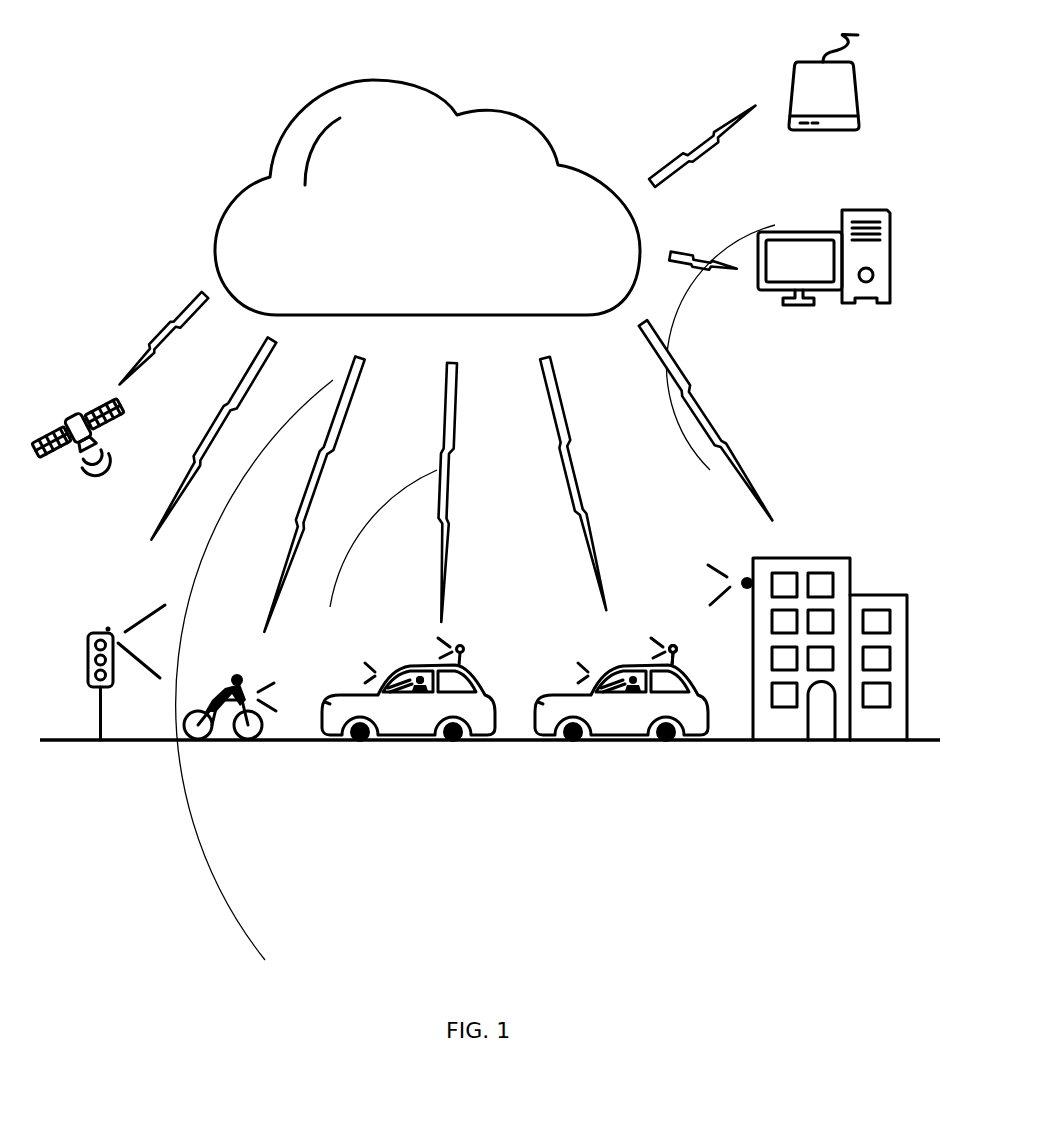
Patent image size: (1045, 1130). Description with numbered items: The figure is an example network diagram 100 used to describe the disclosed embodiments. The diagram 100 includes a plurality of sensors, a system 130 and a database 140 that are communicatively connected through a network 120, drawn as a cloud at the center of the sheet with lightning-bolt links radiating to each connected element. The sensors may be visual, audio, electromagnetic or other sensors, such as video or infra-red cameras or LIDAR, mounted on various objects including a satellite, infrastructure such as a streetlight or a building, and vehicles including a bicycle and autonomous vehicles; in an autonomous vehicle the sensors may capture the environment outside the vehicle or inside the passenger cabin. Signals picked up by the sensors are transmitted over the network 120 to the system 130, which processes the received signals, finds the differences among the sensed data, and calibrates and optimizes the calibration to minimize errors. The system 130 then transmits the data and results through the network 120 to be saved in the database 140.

The network diagram 100 is at (210, 104).
The network 120 is at (512, 88).
The system 130 is at (778, 340).
The database 140 is at (782, 70).